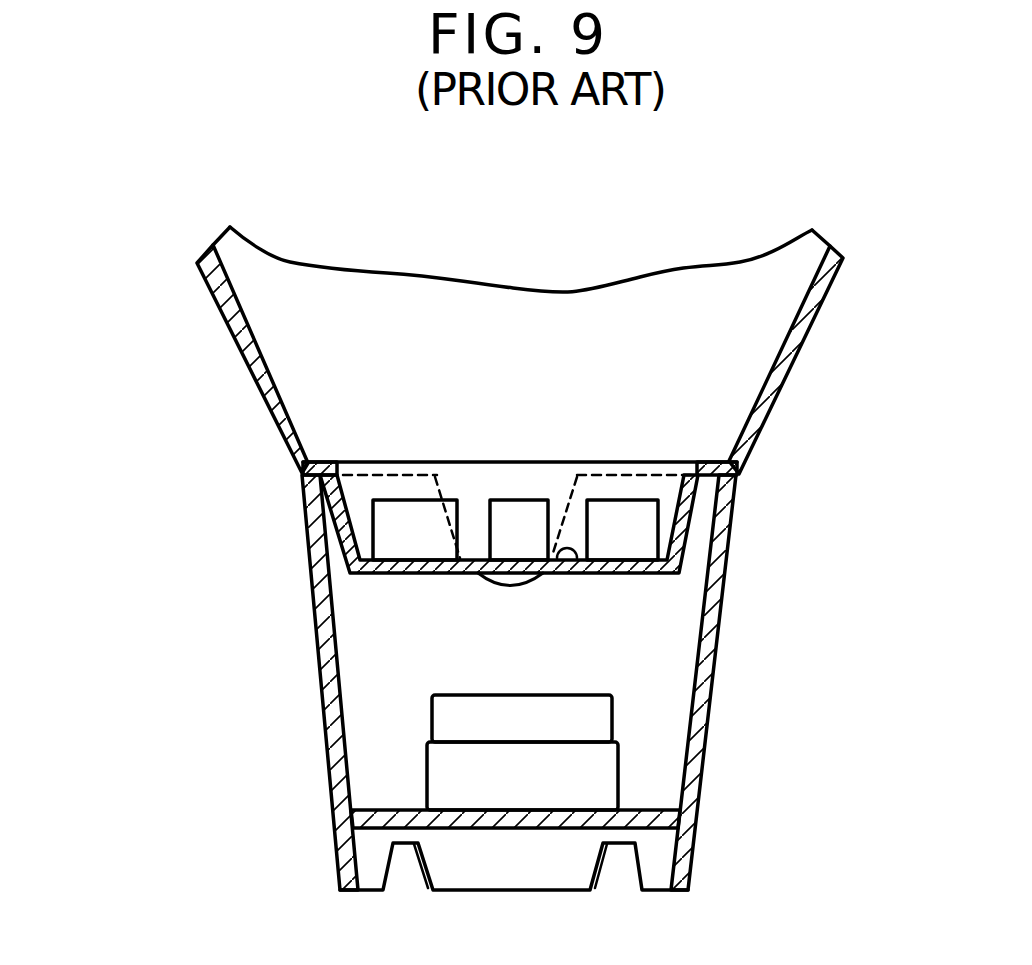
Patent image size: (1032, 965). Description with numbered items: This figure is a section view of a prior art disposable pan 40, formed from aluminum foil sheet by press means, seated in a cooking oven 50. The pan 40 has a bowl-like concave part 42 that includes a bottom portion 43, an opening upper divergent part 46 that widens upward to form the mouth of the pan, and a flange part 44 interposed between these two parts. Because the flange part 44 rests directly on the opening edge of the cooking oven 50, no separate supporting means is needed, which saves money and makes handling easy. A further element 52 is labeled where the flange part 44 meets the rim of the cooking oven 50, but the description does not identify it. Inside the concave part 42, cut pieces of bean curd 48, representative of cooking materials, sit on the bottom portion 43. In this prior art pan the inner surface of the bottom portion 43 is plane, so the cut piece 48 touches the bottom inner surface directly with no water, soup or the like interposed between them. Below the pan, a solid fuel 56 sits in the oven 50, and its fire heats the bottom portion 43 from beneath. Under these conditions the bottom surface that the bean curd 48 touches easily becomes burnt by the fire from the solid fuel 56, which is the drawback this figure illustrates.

The disposable pan 40 is at (183, 267).
The bowl-like concave part 42 is at (360, 535).
The bottom portion 43 is at (578, 557).
The flange part 44 is at (707, 461).
The opening upper divergent part 46 is at (267, 342).
The cut piece of bean curd 48 is at (617, 520).
The cooking oven 50 is at (726, 580).
The flange 52 is at (300, 491).
The solid fuel 56 is at (445, 722).